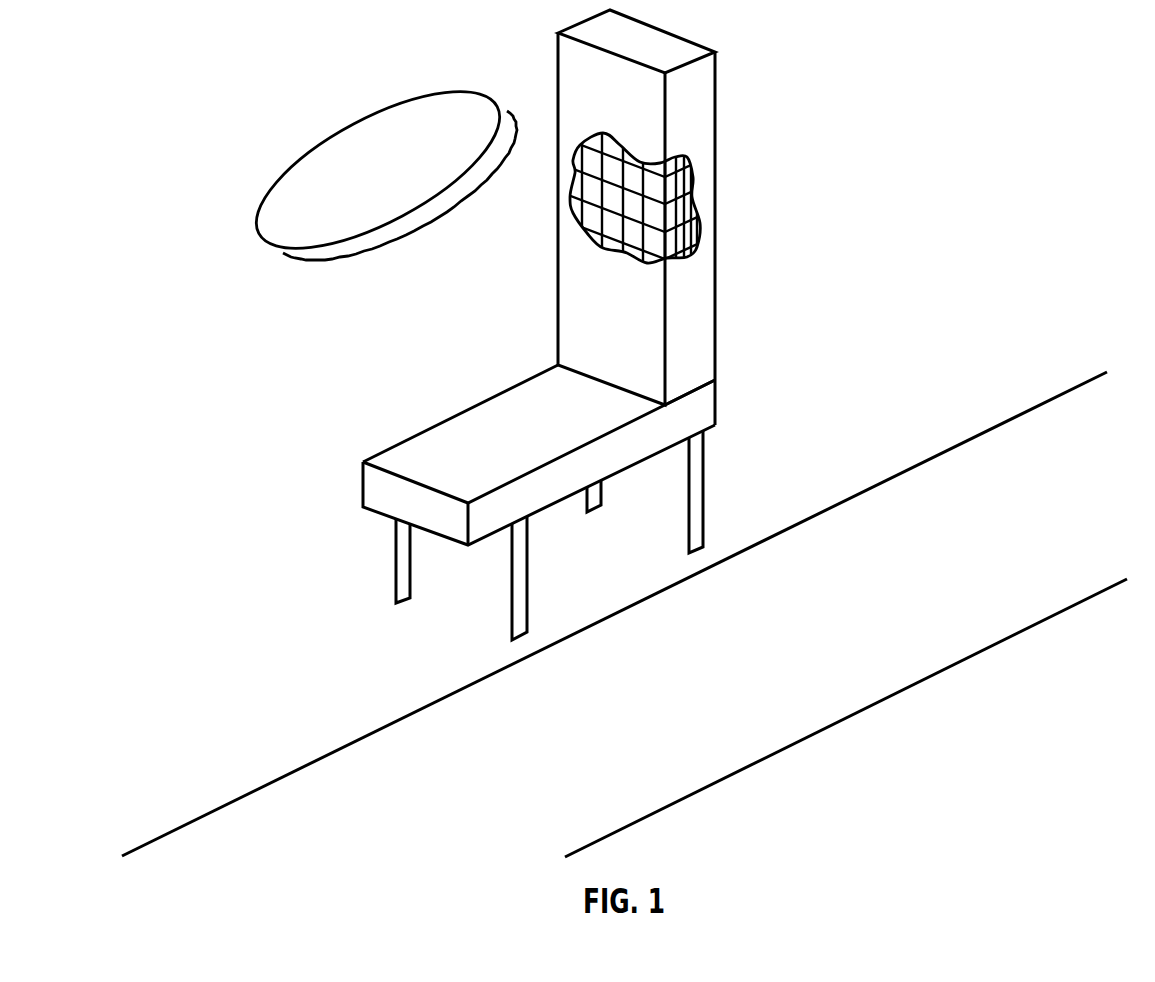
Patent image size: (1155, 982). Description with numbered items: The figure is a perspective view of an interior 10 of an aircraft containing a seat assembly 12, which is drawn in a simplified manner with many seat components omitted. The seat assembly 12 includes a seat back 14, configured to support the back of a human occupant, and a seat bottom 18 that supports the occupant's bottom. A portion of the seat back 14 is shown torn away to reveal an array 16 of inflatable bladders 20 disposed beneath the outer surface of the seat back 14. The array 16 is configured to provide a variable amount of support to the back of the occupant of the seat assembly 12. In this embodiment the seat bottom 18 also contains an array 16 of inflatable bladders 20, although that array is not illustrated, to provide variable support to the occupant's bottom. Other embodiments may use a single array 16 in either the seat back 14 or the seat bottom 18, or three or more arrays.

The interior 10 is at (119, 66).
The seat assembly 12 is at (733, 73).
The seat back 14 is at (712, 277).
The array 16 is at (606, 157).
The seat bottom 18 is at (420, 448).
The inflatable bladders 20 is at (612, 192).